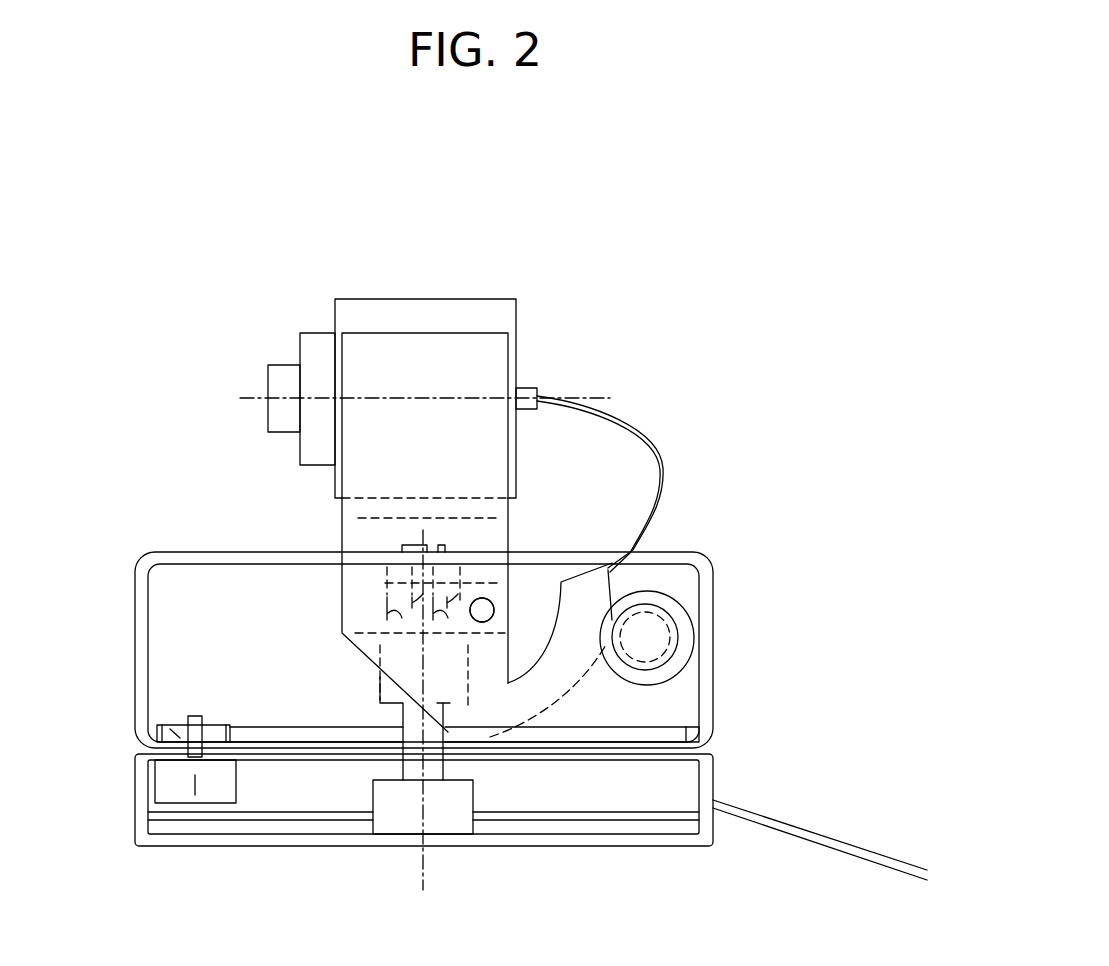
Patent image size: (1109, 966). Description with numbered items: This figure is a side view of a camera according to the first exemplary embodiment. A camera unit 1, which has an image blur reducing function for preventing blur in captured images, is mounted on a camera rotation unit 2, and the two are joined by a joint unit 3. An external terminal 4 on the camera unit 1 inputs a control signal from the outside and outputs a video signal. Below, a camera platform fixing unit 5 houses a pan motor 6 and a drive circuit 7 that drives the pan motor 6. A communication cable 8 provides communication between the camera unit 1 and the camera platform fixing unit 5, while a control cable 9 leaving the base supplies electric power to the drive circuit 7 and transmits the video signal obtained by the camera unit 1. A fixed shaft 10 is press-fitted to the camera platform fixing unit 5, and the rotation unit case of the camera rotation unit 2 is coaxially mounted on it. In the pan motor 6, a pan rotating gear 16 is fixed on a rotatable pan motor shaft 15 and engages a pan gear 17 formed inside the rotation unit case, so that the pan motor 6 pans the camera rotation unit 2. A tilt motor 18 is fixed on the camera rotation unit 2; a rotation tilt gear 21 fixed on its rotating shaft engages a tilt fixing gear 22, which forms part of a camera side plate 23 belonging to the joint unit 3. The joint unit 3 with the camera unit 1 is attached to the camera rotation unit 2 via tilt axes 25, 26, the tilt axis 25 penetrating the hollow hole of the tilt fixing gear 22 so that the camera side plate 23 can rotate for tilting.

The camera unit 1 is at (498, 317).
The camera rotation unit 2 is at (683, 587).
The joint unit 3 is at (482, 508).
The external terminal 4 is at (537, 387).
The camera platform fixing unit 5 is at (678, 845).
The pan motor 6 is at (165, 787).
The drive circuit 7 is at (253, 820).
The communication cable 8 is at (612, 420).
The control cable 9 is at (857, 850).
The fixed shaft 10 is at (423, 760).
The pan motor shaft 15 is at (195, 713).
The pan rotating gear 16 is at (157, 727).
The pan gear 17 is at (342, 608).
The tilt motor 18 is at (690, 647).
The rotation tilt gear 21 is at (668, 647).
The tilt fixing gear 22 is at (570, 713).
The camera side plate 23 is at (413, 343).
The tilt axis 25 is at (495, 610).
The tilt axis 26 is at (482, 610).